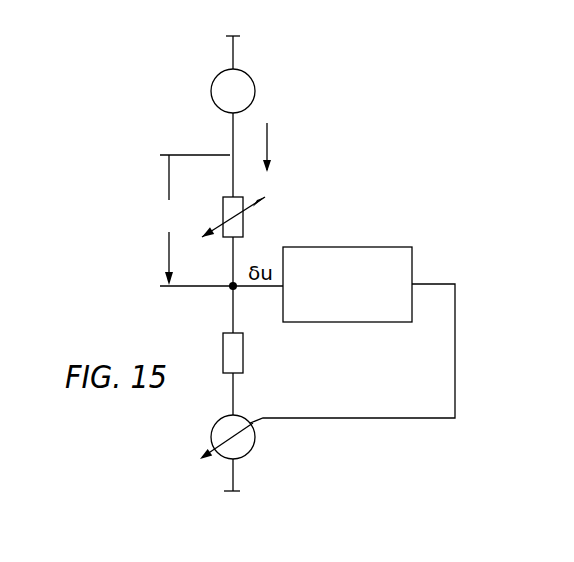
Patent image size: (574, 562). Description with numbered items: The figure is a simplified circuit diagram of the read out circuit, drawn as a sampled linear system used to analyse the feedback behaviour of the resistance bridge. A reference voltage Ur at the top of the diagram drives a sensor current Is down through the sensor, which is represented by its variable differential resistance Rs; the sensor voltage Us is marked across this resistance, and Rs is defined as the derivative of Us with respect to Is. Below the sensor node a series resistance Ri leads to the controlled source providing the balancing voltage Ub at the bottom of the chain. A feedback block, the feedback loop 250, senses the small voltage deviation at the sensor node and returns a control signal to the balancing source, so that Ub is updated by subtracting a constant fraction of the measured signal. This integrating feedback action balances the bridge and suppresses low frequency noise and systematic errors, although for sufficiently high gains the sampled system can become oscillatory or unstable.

The feedback loop 250 is at (327, 247).
The reference voltage Ur is at (247, 89).
The sensor current Is is at (277, 147).
The sensor voltage Us is at (194, 220).
The differential resistance of the sensor Rs is at (237, 218).
The internal resistance Ri is at (245, 353).
The balancing voltage Ub is at (243, 440).